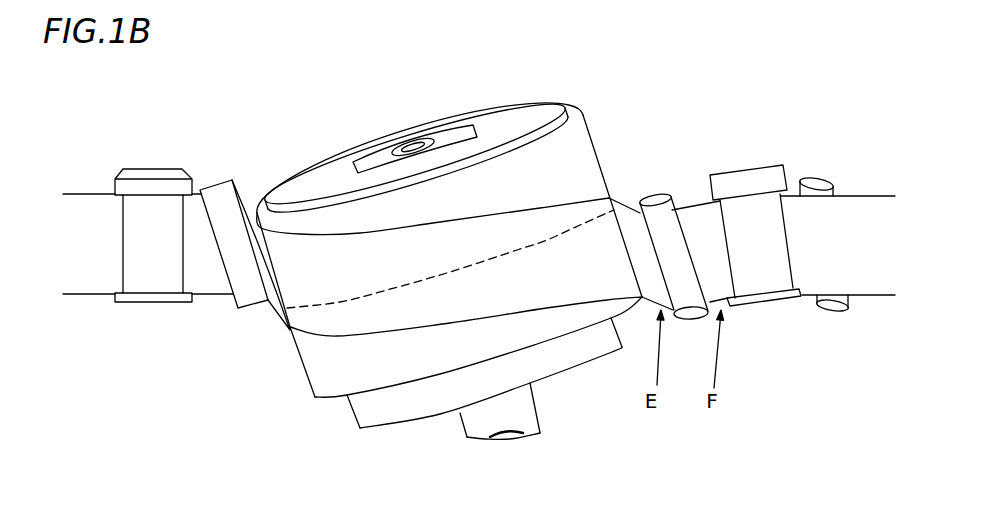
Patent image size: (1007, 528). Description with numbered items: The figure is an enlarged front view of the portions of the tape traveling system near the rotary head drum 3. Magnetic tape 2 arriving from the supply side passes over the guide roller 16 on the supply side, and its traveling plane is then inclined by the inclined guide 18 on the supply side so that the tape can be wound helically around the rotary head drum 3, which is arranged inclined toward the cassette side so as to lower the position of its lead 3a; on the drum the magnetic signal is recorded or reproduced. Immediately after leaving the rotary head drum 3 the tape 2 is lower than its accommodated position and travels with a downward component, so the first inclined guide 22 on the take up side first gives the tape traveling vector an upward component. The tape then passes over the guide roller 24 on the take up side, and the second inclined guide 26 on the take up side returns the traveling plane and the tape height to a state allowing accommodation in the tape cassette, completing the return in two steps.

The magnetic tape 2 is at (100, 285).
The rotary head drum 3 is at (578, 158).
The lead 3a is at (333, 334).
The guide roller on the supply side 16 is at (154, 184).
The inclined guide on the supply side 18 is at (223, 198).
The first inclined guide on the take up side 22 is at (661, 217).
The guide roller on the take up side 24 is at (748, 180).
The second inclined guide on the take up side 26 is at (835, 195).